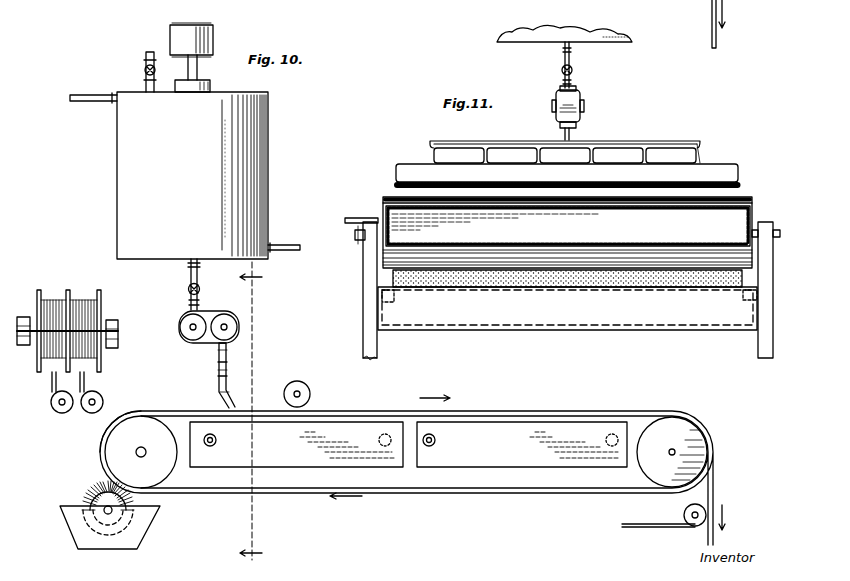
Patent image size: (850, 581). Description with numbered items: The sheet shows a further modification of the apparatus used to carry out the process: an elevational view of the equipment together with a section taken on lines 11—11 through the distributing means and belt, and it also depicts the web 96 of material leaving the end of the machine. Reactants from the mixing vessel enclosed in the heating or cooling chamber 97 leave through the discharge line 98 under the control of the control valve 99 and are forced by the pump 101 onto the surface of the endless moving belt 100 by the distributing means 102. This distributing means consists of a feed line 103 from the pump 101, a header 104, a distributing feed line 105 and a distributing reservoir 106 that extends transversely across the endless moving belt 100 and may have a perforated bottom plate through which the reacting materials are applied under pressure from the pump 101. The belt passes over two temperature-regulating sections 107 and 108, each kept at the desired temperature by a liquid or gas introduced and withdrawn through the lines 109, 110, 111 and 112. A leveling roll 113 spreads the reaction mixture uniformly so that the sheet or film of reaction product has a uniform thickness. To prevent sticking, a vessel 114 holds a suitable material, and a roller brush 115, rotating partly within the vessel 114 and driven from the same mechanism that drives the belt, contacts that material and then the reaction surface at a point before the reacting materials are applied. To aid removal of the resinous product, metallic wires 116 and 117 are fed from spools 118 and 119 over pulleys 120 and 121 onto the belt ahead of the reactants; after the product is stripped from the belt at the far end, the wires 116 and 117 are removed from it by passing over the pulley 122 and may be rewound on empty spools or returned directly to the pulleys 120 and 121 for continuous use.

In FIG. 10, the section lines 11— 11 is at (262, 411).
In FIG. 11, the web / sheet material 96 is at (684, 0).
In FIG. 10, the heating or cooling chamber 97 is at (268, 167).
In FIG. 11, the heating or cooling chamber 97 is at (565, 30).
In FIG. 10, the discharge line 98 is at (189, 284).
In FIG. 11, the discharge line 98 is at (572, 58).
In FIG. 10, the control valve 99 is at (200, 289).
In FIG. 11, the control valve 99 is at (560, 72).
In FIG. 10, the endless moving belt 100 is at (378, 496).
In FIG. 11, the endless moving belt 100 is at (752, 198).
In FIG. 10, the pump 101 is at (240, 322).
In FIG. 11, the pump 101 is at (584, 104).
In FIG. 10, the distributing means 102 is at (218, 368).
In FIG. 11, the distributing means 102 is at (700, 146).
In FIG. 10, the feed line 103 is at (227, 356).
In FIG. 11, the feed line 103 is at (572, 138).
In FIG. 11, the header 104 is at (640, 141).
In FIG. 10, the distributing feed line 105 is at (228, 376).
In FIG. 11, the distributing feed line 105 is at (535, 160).
In FIG. 10, the distributing reservoir 106 is at (230, 400).
In FIG. 11, the distributing reservoir 106 is at (418, 172).
In FIG. 10, the temperature-regulating section 107 is at (272, 455).
In FIG. 11, the temperature-regulating section 107 is at (385, 200).
In FIG. 10, the temperature-regulating section 108 is at (505, 455).
In FIG. 10, the line 109 is at (216, 438).
In FIG. 11, the line 109 is at (362, 220).
In FIG. 10, the line 110 is at (378, 440).
In FIG. 10, the line 111 is at (436, 437).
In FIG. 10, the line 112 is at (605, 440).
In FIG. 10, the leveling roll 113 is at (305, 385).
In FIG. 10, the vessel 114 is at (150, 528).
In FIG. 11, the vessel 114 is at (760, 316).
In FIG. 10, the roller brush 115 is at (93, 496).
In FIG. 11, the roller brush 115 is at (393, 278).
In FIG. 10, the metallic wire 116 is at (52, 390).
In FIG. 11, the metallic wire 116 is at (690, 186).
In FIG. 10, the metallic wire 117 is at (88, 394).
In FIG. 11, the metallic wire 117 is at (460, 184).
In FIG. 10, the spool 118 is at (48, 292).
In FIG. 10, the spool 119 is at (79, 290).
In FIG. 10, the pulley 120 is at (54, 412).
In FIG. 10, the pulley 121 is at (88, 414).
In FIG. 10, the pulley 122 is at (684, 510).